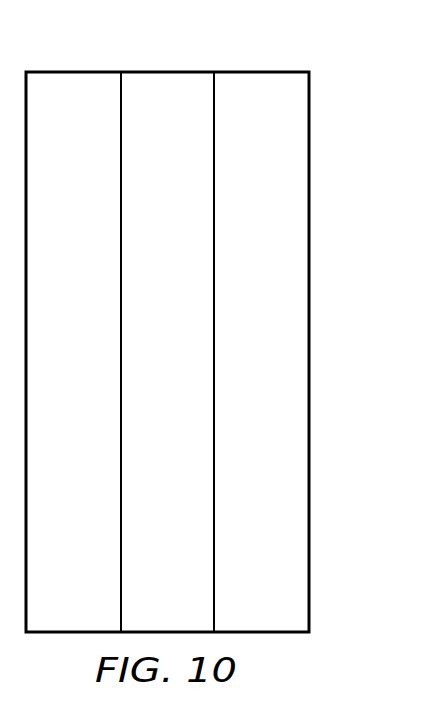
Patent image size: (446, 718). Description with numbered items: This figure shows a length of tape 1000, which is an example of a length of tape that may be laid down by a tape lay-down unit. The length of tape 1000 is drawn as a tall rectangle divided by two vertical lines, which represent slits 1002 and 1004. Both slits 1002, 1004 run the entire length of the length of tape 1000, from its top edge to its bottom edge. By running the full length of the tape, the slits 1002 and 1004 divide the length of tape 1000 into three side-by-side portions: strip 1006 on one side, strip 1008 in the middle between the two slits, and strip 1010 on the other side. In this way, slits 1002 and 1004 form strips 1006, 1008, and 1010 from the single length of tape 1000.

The length of tape 1000 is at (314, 146).
The slit 1002 is at (120, 318).
The slit 1004 is at (215, 318).
The strip 1006 is at (100, 365).
The strip 1008 is at (195, 365).
The strip 1010 is at (288, 365).